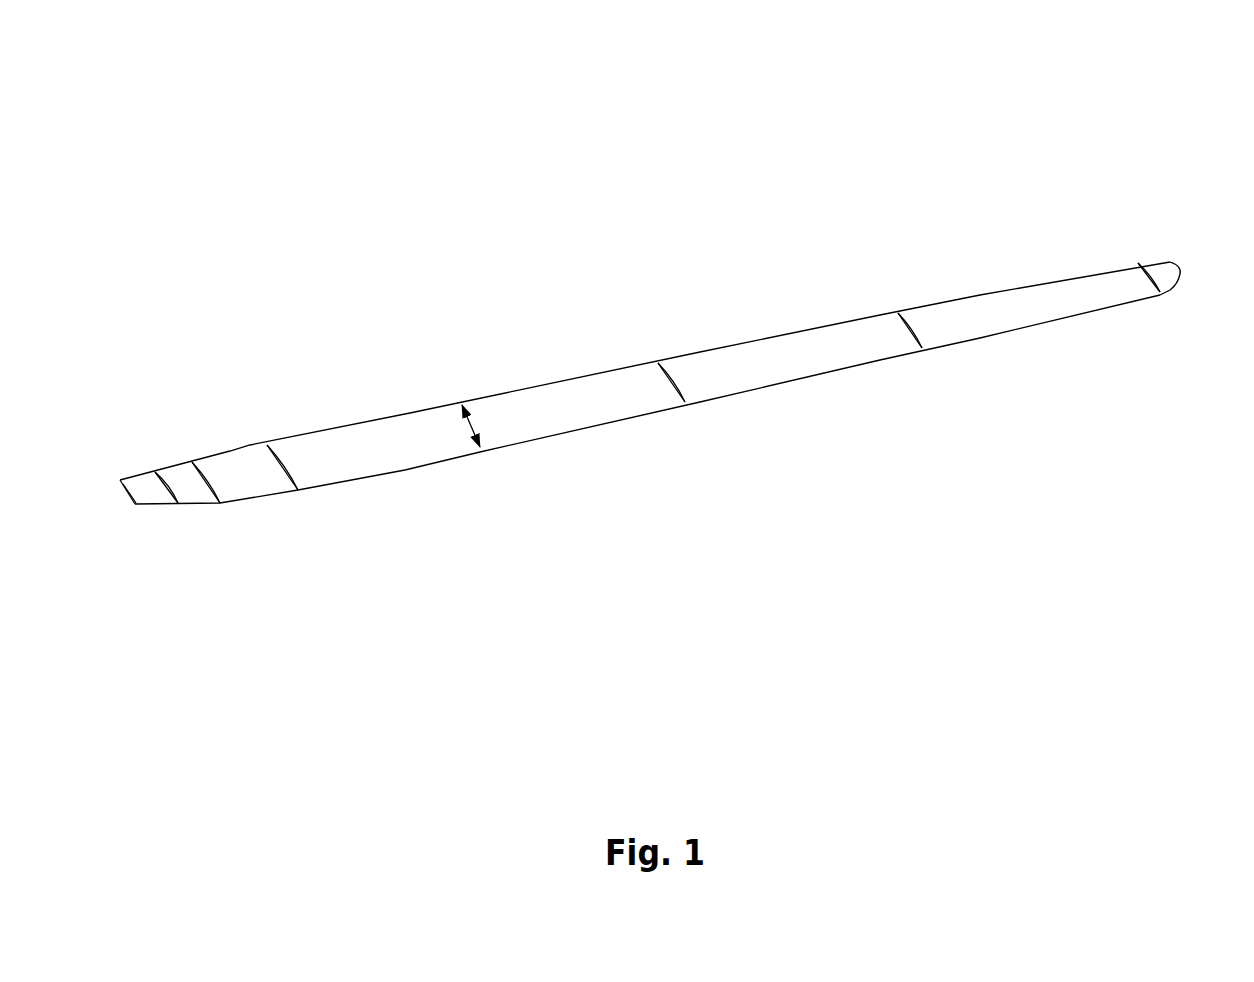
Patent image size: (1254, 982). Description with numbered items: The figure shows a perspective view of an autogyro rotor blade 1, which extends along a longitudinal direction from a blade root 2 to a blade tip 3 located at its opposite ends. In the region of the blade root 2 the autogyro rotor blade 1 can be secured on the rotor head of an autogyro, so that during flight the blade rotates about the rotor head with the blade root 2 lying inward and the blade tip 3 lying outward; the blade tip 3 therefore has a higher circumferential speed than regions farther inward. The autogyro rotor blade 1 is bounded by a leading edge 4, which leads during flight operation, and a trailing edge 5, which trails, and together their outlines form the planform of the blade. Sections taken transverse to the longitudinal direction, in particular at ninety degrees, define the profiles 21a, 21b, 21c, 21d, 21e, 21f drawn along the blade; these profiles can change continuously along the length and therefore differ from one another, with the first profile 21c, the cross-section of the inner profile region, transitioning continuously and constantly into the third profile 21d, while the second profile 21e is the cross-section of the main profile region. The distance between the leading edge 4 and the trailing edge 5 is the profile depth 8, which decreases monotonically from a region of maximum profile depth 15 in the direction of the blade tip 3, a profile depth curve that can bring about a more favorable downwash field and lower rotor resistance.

The autogyro rotor blade 1 is at (362, 205).
The blade root 2 is at (188, 347).
The blade tip 3 is at (1100, 197).
The leading edge 4 is at (723, 348).
The trailing edge 5 is at (630, 420).
The profile depth 8 is at (477, 427).
The region of maximum profile depth 15 is at (249, 428).
The profile 21a is at (166, 484).
The profile 21b is at (192, 490).
The first profile 21c is at (280, 458).
The third profile 21d is at (677, 383).
The second profile 21e is at (917, 332).
The profile 21f is at (1128, 302).